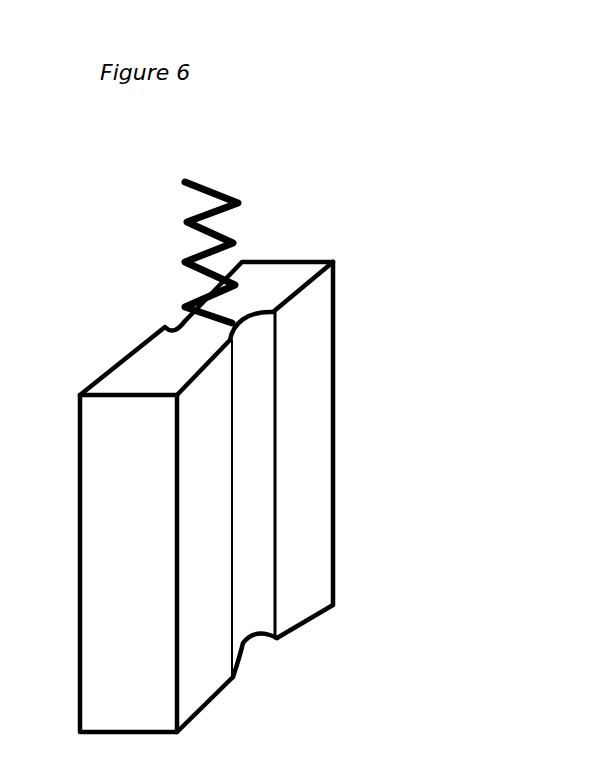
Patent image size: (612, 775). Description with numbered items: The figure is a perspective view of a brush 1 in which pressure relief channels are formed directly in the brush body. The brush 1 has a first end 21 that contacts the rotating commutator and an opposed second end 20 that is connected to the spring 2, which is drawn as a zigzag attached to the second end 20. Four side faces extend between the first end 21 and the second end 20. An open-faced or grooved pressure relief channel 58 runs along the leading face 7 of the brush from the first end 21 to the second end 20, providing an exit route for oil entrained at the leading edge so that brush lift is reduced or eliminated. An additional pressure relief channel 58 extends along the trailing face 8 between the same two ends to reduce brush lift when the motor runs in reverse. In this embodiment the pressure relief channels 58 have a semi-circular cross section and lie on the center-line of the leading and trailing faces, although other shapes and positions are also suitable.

The brush 1 is at (284, 471).
The spring 2 is at (223, 230).
The leading face 7 is at (318, 498).
The trailing face 8 is at (103, 370).
The second end 20 is at (285, 273).
The first end 21 is at (200, 712).
The pressure relief channel 58 is at (180, 320).